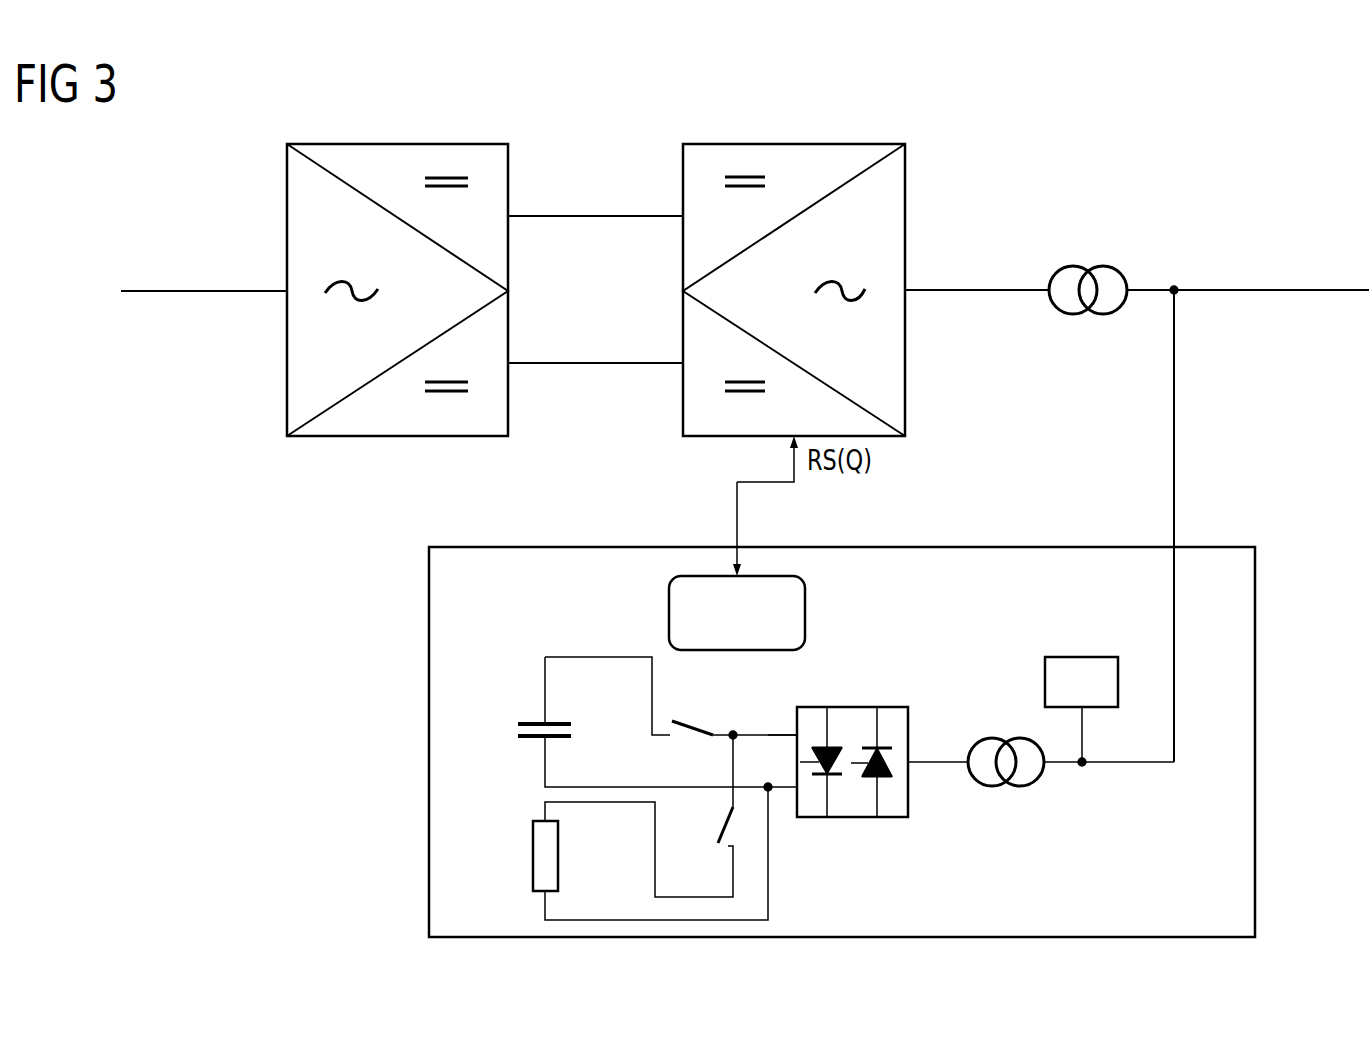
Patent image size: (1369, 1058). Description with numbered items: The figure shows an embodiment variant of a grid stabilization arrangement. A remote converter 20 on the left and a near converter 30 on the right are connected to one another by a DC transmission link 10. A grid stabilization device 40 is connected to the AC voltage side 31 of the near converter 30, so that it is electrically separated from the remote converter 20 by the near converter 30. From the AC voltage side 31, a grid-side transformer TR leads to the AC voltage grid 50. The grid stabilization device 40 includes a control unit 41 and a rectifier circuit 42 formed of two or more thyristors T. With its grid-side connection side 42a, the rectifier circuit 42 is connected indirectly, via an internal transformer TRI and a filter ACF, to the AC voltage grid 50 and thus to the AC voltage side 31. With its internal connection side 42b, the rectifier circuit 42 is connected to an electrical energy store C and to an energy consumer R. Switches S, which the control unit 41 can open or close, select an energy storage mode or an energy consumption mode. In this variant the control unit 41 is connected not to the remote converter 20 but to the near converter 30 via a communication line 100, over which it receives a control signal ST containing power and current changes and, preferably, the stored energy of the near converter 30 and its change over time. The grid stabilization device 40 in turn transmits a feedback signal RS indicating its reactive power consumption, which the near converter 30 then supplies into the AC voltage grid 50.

The DC transmission link 10 is at (593, 216).
The remote converter 20 is at (287, 178).
The near converter 30 is at (905, 178).
The AC voltage side 31 is at (905, 290).
The grid stabilization device 40 is at (429, 590).
The control unit 41 is at (669, 610).
The rectifier circuit 42 is at (852, 754).
The grid-side connection side 42a is at (908, 762).
The internal connection side 42b is at (797, 755).
The AC voltage grid 50 is at (1016, 288).
The communication line 100 is at (737, 500).
The grid-side transformer TR is at (1086, 314).
The internal transformer TRI is at (1005, 787).
The filter ACF is at (1044, 672).
The electrical energy store C is at (528, 718).
The energy consumer R is at (533, 852).
The switches S is at (692, 720).
The thyristors T is at (875, 780).